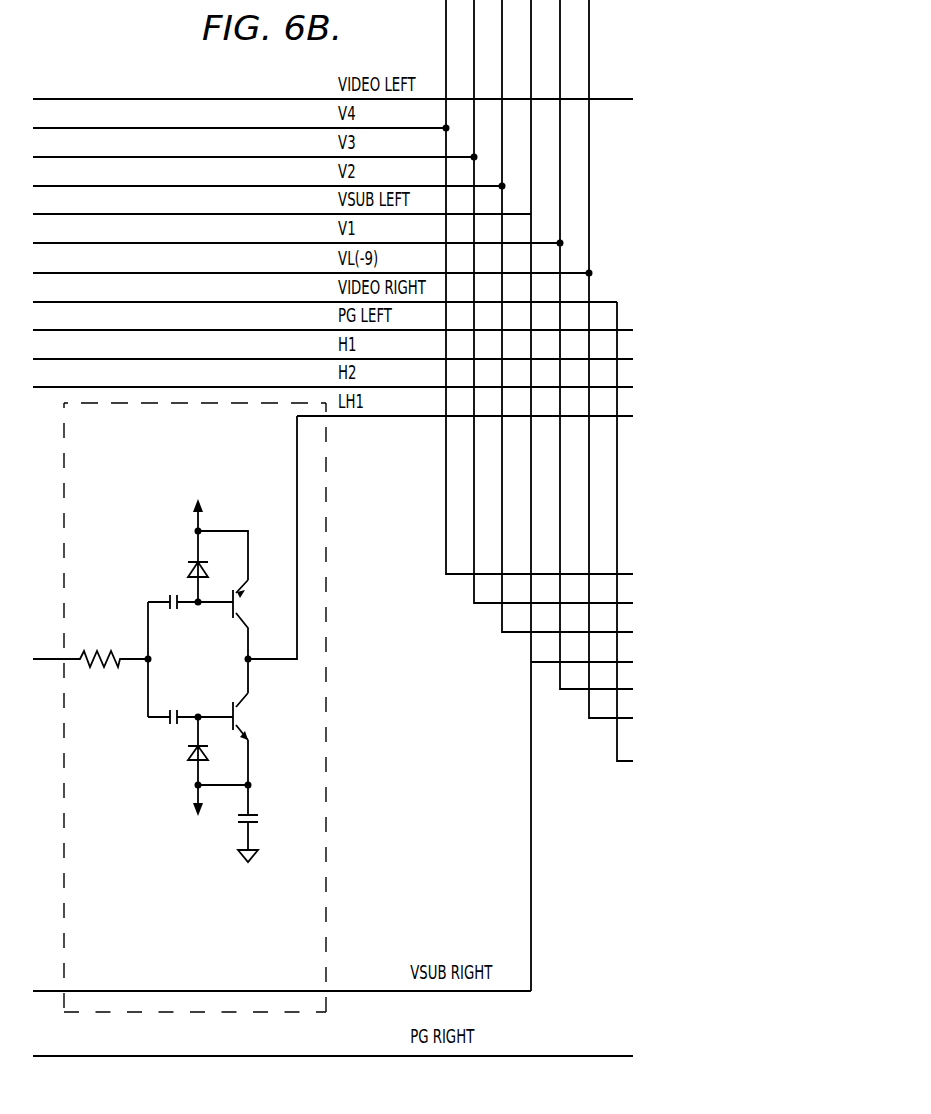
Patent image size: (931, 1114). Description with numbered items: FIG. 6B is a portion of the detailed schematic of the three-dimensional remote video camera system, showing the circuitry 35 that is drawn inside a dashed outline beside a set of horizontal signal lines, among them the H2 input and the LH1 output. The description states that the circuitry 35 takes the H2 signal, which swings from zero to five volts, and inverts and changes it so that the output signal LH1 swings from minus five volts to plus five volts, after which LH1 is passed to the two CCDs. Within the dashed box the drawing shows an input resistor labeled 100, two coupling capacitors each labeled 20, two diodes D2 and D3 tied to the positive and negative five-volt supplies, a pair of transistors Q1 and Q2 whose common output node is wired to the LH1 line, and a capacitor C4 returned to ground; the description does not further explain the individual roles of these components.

The circuitry 35 is at (63, 828).
The resistor R1 (100 ohm) 100 is at (90, 660).
The capacitors C2 and C3 (20 pF) 20 is at (190, 659).
The diode D2 is at (185, 553).
The diode D3 is at (185, 751).
The transistor Q1 is at (255, 721).
The transistor Q2 is at (255, 615).
The capacitor C4 (0.1 uF) C4 is at (266, 823).